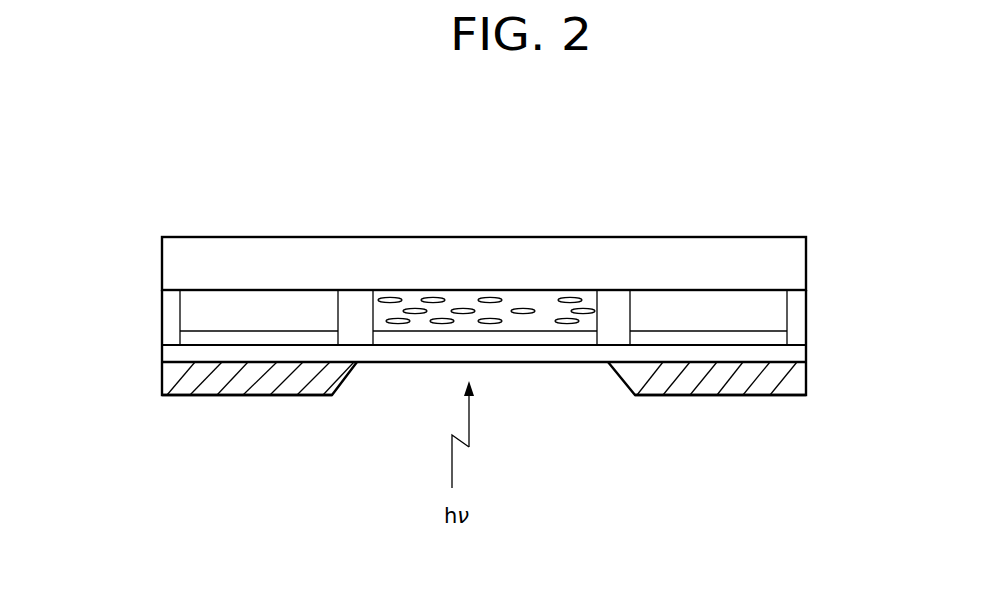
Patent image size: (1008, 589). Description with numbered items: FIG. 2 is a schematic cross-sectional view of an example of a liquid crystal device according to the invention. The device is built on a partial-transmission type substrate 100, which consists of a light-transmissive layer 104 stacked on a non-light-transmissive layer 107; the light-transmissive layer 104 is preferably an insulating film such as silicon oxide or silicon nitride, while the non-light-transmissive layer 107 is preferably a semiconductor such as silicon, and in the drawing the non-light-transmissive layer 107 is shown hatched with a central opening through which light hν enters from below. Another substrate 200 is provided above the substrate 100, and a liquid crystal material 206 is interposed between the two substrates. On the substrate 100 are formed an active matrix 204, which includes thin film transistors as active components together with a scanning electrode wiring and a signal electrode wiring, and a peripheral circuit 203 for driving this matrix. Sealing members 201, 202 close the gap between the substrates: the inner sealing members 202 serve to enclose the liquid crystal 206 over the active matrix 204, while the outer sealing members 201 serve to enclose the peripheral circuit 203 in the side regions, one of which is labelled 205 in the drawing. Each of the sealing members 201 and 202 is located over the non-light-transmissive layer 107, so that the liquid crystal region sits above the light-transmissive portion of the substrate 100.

The partial-transmission type substrate 100 is at (762, 408).
The light-transmissive layer 104 is at (795, 352).
The non-light-transmissive layer 107 is at (795, 387).
The another substrate 200 is at (782, 253).
The sealing member 201 is at (833, 320).
The sealing member 202 is at (345, 318).
The peripheral circuit 203 is at (727, 335).
The active matrix 204 is at (503, 337).
The cavity 205 is at (217, 335).
The liquid crystal material 206 is at (397, 310).